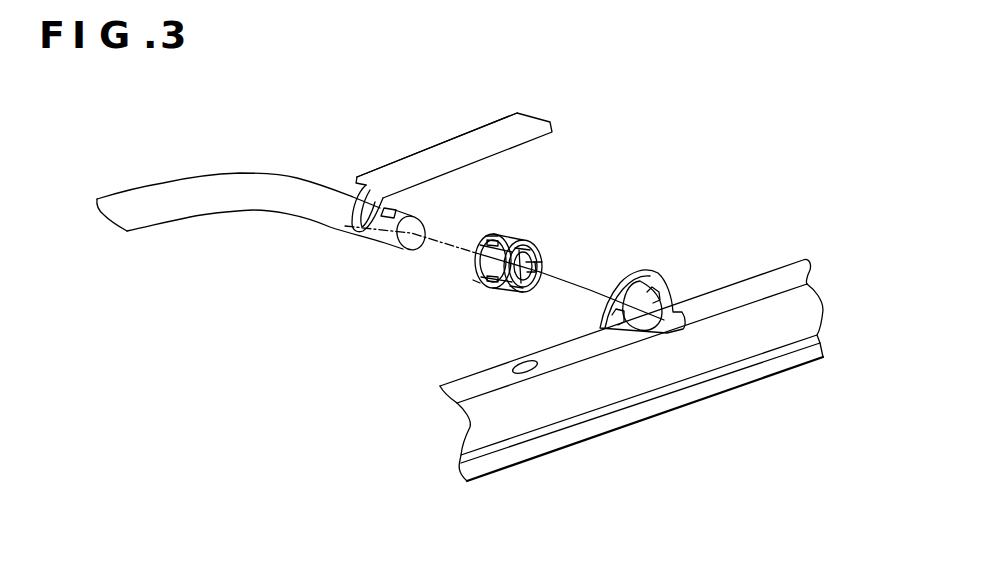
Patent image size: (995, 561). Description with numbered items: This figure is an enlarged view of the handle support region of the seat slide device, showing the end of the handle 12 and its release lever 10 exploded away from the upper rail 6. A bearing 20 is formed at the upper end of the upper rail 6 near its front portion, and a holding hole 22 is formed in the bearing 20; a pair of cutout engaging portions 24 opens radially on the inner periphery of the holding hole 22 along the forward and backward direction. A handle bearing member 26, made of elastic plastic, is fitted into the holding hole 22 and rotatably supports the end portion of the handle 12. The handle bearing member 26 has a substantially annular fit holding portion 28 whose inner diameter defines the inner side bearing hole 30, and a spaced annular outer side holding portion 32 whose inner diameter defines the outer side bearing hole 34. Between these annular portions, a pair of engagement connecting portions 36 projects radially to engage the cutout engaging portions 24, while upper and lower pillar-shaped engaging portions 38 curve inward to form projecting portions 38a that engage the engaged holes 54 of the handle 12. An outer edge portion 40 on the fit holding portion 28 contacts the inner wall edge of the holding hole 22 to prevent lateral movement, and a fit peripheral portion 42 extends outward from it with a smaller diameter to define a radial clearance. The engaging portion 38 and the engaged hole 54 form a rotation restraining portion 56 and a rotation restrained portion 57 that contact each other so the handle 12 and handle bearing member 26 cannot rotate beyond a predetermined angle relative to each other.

The upper rail 6 is at (530, 407).
The release lever 10 is at (503, 131).
The handle 12 is at (298, 207).
The bearing 20 is at (670, 248).
The holding hole 22 is at (648, 316).
The cutout engaging portion 24 is at (663, 281).
The handle bearing member 26 is at (544, 193).
The fit holding portion 28 is at (487, 287).
The inner side bearing hole 30 is at (481, 240).
The outer side holding portion 32 is at (522, 292).
The outer side bearing hole 34 is at (528, 277).
The engagement connecting portion 36 is at (475, 258).
The engaging portion 38 is at (523, 250).
The projecting portion 38a is at (516, 290).
The outer edge portion 40 is at (473, 280).
The fit peripheral portion 42 is at (490, 233).
The engaged hole 54 is at (388, 208).
The rotation restraining portion 56 is at (540, 270).
The rotation restrained portion 57 is at (382, 217).